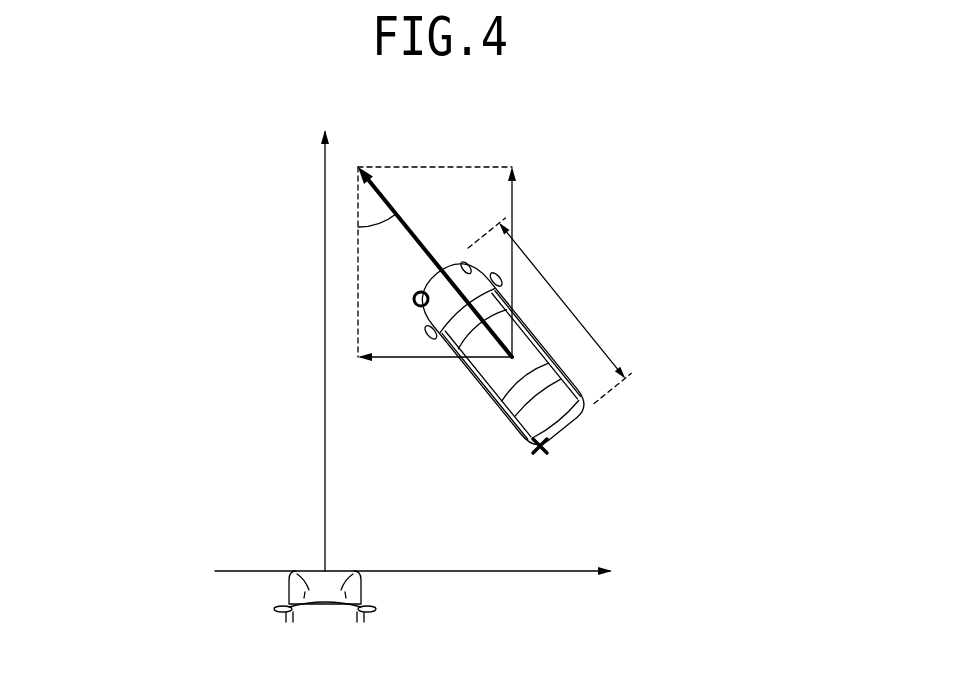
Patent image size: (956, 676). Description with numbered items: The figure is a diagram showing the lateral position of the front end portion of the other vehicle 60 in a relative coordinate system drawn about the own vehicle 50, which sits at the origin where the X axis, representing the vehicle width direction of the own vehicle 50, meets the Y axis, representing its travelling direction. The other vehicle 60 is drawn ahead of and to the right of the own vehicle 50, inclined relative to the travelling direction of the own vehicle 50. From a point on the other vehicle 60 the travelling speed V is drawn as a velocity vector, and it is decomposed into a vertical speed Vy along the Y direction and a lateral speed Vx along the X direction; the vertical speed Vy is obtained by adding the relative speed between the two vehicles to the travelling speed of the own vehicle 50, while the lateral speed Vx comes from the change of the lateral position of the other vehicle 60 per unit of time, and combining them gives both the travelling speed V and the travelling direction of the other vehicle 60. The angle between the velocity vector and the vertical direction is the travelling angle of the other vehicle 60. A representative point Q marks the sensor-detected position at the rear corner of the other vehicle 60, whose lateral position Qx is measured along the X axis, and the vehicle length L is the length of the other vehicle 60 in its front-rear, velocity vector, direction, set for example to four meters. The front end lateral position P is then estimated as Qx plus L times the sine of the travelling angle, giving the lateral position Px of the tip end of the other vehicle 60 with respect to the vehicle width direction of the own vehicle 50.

The own vehicle 50 is at (365, 598).
The other vehicle 60 is at (497, 399).
The lateral position of the front end portion P is at (413, 299).
The representative point Q is at (548, 447).
The travelling speed V is at (386, 196).
The lateral speed Vx is at (404, 359).
The vertical speed Vy is at (514, 197).
The vehicle length L is at (573, 310).
The X-axis X is at (424, 573).
The Y-axis Y is at (325, 333).